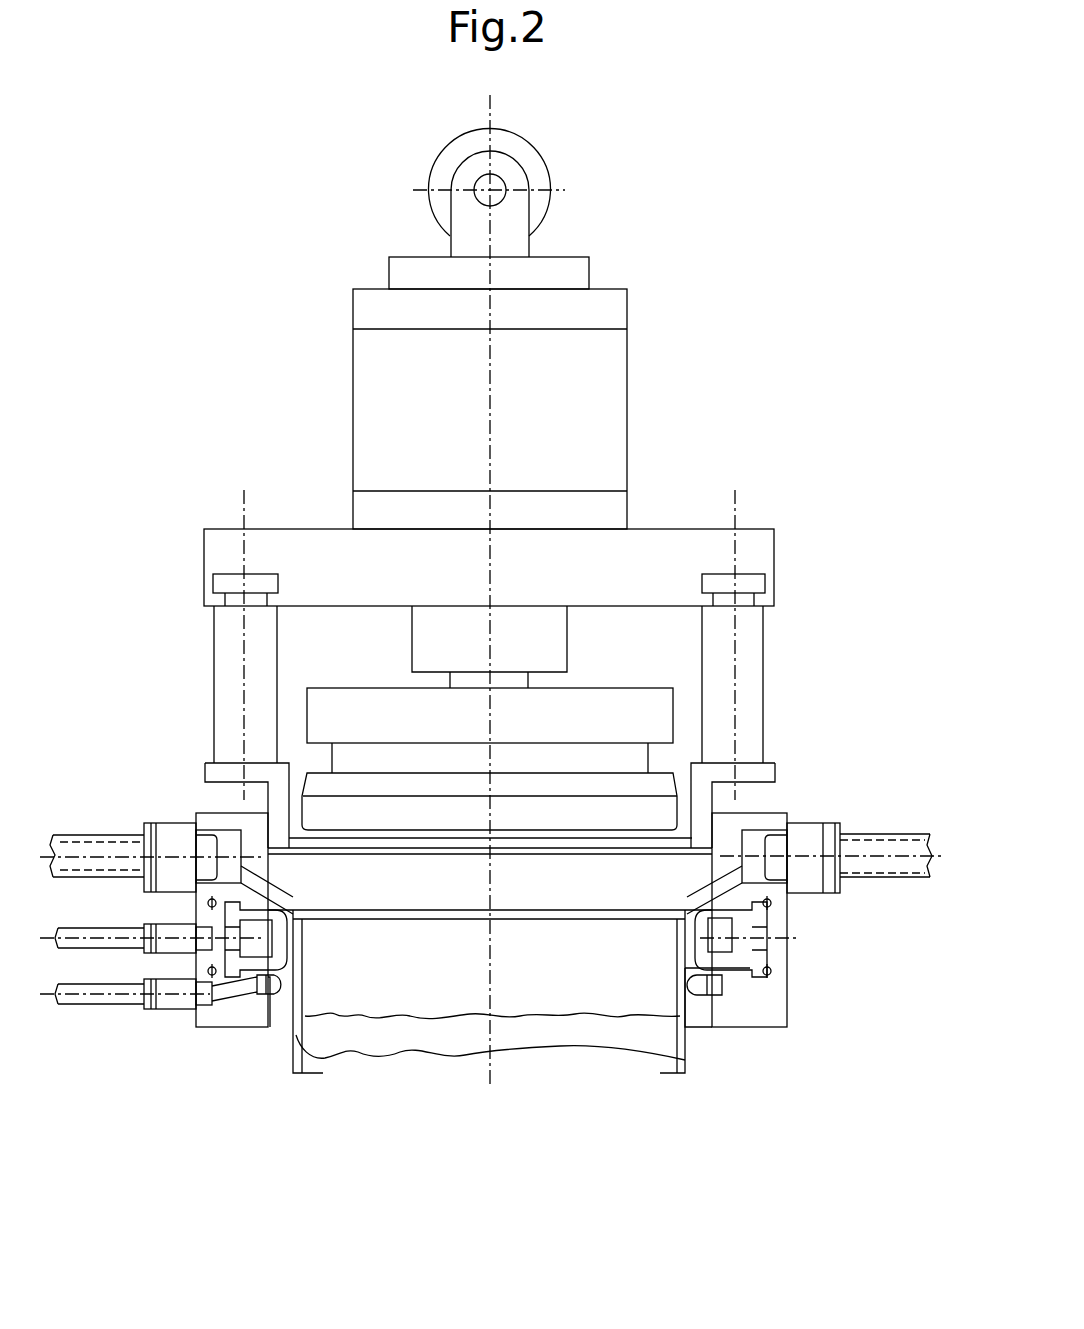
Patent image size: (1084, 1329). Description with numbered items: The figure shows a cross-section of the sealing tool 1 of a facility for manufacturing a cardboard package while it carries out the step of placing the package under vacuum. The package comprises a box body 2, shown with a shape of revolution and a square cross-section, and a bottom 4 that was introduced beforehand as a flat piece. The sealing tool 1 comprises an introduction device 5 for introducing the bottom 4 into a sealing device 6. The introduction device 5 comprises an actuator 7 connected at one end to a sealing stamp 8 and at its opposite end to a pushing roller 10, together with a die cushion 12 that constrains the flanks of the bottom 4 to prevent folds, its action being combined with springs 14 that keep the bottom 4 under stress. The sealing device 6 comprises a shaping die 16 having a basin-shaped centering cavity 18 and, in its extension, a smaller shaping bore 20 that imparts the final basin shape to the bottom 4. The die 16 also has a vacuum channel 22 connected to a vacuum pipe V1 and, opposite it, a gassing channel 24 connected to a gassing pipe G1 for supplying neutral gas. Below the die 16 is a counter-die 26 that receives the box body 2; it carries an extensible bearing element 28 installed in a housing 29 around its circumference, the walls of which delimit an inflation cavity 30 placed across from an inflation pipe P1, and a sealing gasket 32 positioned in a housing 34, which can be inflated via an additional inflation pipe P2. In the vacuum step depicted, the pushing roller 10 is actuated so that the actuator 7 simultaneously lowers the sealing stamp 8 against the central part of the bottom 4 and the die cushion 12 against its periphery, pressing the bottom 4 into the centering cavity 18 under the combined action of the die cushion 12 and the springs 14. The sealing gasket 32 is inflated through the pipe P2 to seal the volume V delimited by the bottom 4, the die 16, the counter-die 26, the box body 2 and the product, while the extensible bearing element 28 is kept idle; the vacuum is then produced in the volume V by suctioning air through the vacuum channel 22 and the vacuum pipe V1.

The sealing tool 1 is at (183, 428).
The box body 2 is at (305, 1005).
The bottom 4 is at (353, 855).
The introduction device 5 is at (690, 255).
The sealing device 6 is at (818, 948).
The actuator 7 is at (368, 398).
The sealing stamp 8 is at (668, 803).
The pushing roller 10 is at (453, 166).
The die cushion 12 is at (702, 830).
The springs 14 is at (243, 680).
The shaping die 16 is at (223, 818).
The centering cavity 18 is at (680, 840).
The shaping bore 20 is at (677, 868).
The vacuum channel 22 is at (288, 895).
The gassing channel 24 is at (716, 893).
The counter-die 26 is at (755, 1002).
The extensible bearing element 28 is at (700, 937).
The housing 29 is at (770, 955).
The inflation cavity 30 is at (722, 930).
The sealing gasket 32 is at (287, 985).
The housing 34 is at (258, 1002).
The vacuum pipe V1 is at (168, 866).
The inflation pipe P1 is at (165, 940).
The additional inflation pipe P2 is at (168, 997).
The gassing pipe G1 is at (878, 864).
The volume V is at (503, 896).